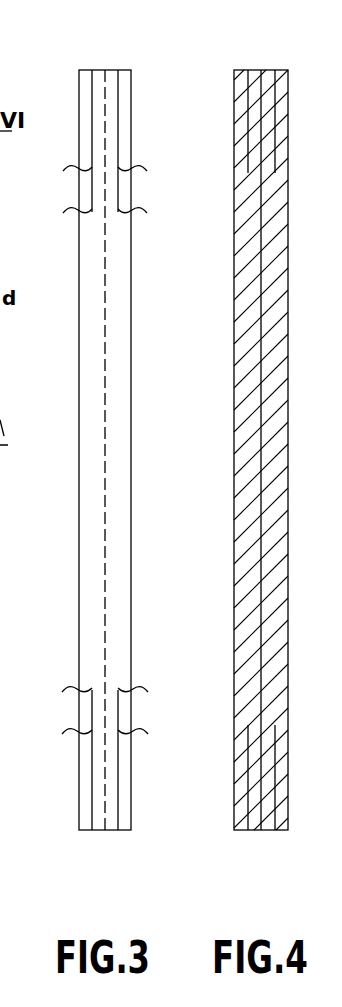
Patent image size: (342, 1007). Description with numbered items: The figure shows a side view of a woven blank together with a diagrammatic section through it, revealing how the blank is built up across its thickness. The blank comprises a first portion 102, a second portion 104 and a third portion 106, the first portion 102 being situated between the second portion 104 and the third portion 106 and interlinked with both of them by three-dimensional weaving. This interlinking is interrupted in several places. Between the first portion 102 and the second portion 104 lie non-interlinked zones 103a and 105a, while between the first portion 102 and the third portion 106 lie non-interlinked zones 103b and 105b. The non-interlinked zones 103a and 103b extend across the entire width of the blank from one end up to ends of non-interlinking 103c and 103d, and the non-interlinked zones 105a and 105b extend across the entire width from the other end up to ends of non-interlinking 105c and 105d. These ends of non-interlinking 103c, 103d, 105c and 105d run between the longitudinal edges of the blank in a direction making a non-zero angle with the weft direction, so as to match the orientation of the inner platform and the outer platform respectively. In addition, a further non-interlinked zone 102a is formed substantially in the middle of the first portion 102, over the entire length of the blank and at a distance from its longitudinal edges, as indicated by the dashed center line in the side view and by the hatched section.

In FIG. 3, the first portion 102 is at (98, 78).
In FIG. 3, the non-interlinked zone 102a is at (105, 472).
In FIG. 4, the non-interlinked zone 102a is at (268, 424).
In FIG. 3, the non-interlinked zone 103a is at (57, 745).
In FIG. 3, the non-interlinked zone 103b is at (153, 745).
In FIG. 3, the end of non-interlinking 103c is at (57, 703).
In FIG. 3, the end of non-interlinking 103d is at (153, 703).
In FIG. 3, the second portion 104 is at (83, 108).
In FIG. 3, the non-interlinked zone 105a is at (57, 157).
In FIG. 3, the non-interlinked zone 105b is at (153, 157).
In FIG. 3, the end of non-interlinking 105c is at (57, 198).
In FIG. 3, the end of non-interlinking 105d is at (153, 198).
In FIG. 3, the third portion 106 is at (127, 108).